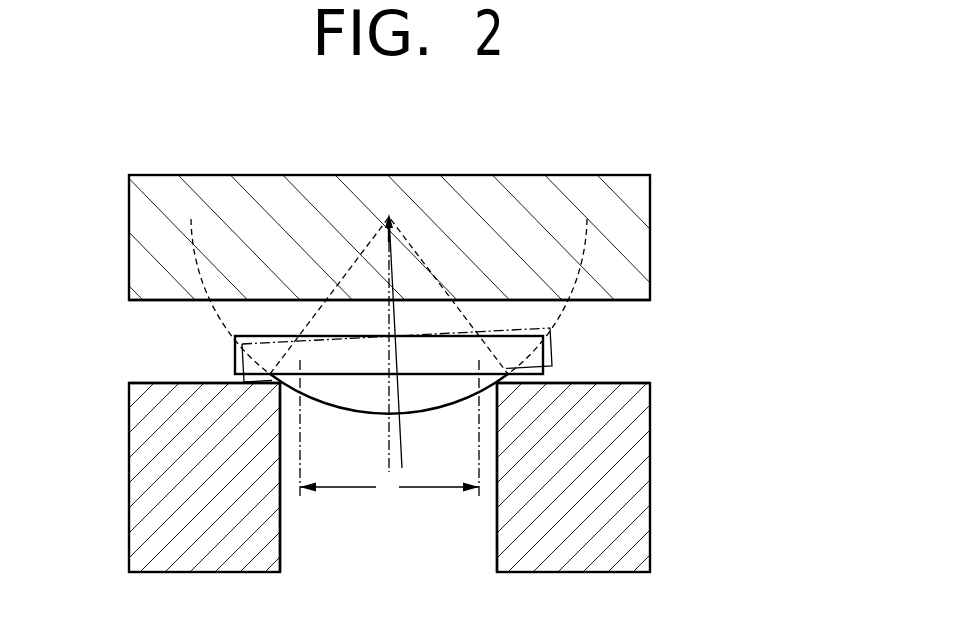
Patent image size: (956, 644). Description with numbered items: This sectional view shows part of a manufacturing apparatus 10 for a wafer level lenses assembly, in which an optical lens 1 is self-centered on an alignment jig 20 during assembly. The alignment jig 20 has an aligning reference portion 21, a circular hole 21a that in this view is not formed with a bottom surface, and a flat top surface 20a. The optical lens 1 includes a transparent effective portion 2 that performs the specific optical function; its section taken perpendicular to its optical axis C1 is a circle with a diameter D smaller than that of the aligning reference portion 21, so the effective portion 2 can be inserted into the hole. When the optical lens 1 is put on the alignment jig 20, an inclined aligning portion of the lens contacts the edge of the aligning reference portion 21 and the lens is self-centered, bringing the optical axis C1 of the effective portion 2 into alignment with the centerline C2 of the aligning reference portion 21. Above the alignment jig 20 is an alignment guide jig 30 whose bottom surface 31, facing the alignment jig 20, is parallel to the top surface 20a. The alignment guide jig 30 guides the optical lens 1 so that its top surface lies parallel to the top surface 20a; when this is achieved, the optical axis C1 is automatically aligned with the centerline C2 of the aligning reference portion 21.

The manufacturing apparatus 10 is at (545, 138).
The alignment guide jig 30 is at (676, 222).
The bottom surface of the alignment guide jig 31 is at (624, 300).
The optical lens 1 is at (573, 346).
The effective portion 2 is at (330, 406).
The alignment jig 20 is at (678, 459).
The top surface of the alignment jig 20a is at (622, 383).
The aligning reference portion 21 is at (496, 388).
The circular hole 21a is at (389, 558).
The optical axis of the effective portion C1 is at (405, 452).
The centerline of the aligning reference portion C2 is at (387, 460).
The diameter of the effective portion D is at (389, 430).